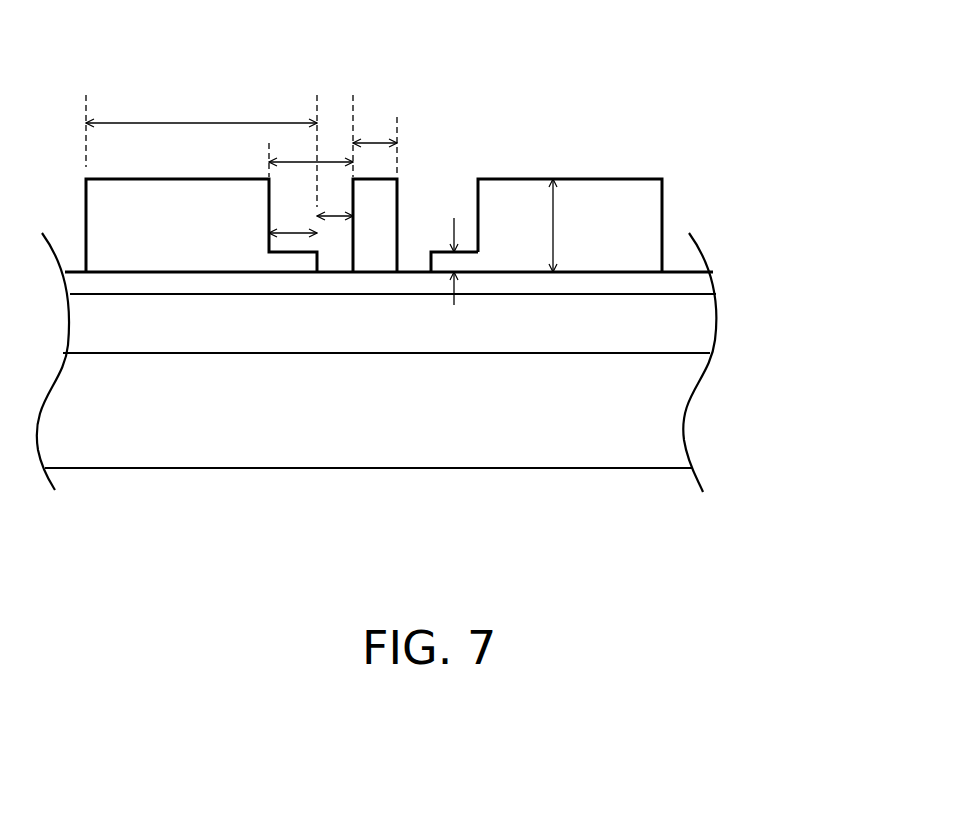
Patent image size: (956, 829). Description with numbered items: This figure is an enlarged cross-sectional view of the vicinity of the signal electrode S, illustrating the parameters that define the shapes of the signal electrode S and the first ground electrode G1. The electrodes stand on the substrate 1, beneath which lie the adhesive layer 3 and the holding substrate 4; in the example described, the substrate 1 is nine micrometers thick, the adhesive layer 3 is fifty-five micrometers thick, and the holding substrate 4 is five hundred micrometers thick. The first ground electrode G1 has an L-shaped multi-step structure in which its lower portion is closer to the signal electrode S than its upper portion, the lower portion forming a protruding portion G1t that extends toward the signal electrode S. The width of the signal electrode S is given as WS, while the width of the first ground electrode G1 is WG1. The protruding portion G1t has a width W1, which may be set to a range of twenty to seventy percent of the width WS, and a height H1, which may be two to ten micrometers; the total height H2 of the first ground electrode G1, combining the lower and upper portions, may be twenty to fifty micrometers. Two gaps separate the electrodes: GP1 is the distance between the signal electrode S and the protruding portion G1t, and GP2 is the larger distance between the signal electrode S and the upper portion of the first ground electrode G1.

The substrate 1 is at (697, 283).
The adhesive layer 3 is at (687, 342).
The holding substrate 4 is at (575, 435).
The first ground electrode G1 is at (200, 263).
The protruding portion of the first ground electrode G1t is at (463, 263).
The signal electrode S is at (378, 192).
The width of the protruding portion W1 is at (300, 240).
The gap between signal electrode and protruding portion GP1 is at (345, 223).
The gap between signal electrode and upper portion of first ground electrode GP2 is at (283, 152).
The width of the first ground electrode WG1 is at (201, 150).
The width of the signal electrode WS is at (372, 138).
The height of the protruding portion H1 is at (461, 276).
The height of the first ground electrode H2 is at (574, 225).